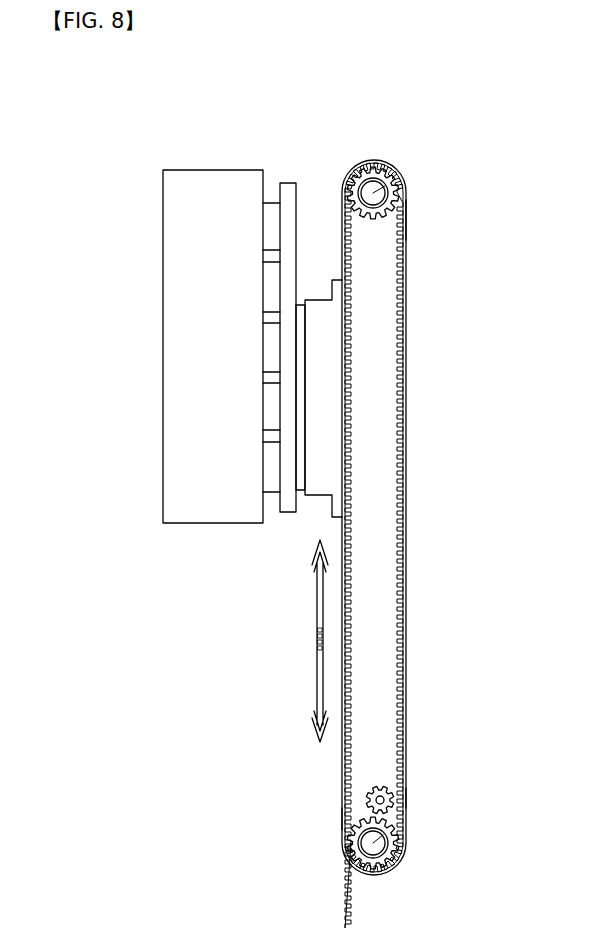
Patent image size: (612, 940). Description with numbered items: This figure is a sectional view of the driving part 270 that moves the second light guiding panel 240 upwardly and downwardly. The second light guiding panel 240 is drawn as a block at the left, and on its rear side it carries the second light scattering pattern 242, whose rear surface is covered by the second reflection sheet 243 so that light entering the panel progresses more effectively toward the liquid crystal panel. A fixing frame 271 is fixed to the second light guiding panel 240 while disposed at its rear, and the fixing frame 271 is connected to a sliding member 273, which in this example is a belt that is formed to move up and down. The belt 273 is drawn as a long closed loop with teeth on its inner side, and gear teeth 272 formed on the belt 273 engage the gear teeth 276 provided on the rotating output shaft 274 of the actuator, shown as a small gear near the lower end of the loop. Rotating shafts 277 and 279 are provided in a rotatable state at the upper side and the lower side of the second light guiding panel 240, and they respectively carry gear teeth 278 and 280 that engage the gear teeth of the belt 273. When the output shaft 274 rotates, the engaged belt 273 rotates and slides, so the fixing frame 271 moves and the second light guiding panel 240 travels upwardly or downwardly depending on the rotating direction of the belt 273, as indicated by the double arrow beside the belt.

The second light guiding panel 240 is at (197, 387).
The second light scattering pattern 242 is at (275, 285).
The second reflection sheet 243 is at (290, 228).
The driving part 270 is at (383, 496).
The fixing frame 271 is at (320, 483).
The gear teeth 272 is at (405, 663).
The sliding member 273 is at (405, 705).
The output shaft 274 is at (404, 797).
The gear teeth 276 is at (386, 788).
The rotating shaft 277 is at (402, 186).
The gear teeth 278 is at (404, 224).
The rotating shaft 279 is at (404, 837).
The gear teeth 280 is at (360, 822).